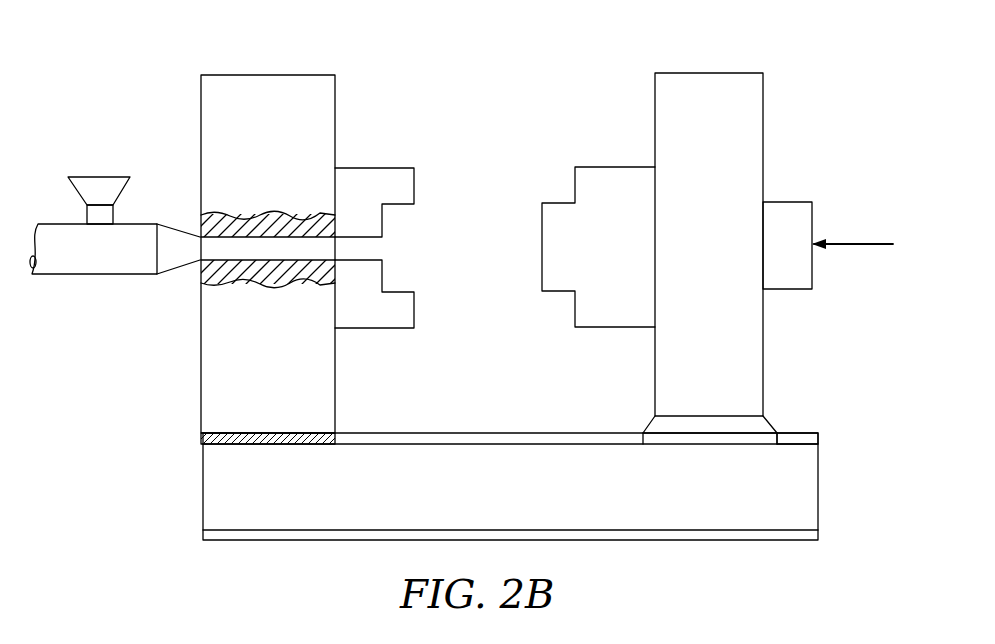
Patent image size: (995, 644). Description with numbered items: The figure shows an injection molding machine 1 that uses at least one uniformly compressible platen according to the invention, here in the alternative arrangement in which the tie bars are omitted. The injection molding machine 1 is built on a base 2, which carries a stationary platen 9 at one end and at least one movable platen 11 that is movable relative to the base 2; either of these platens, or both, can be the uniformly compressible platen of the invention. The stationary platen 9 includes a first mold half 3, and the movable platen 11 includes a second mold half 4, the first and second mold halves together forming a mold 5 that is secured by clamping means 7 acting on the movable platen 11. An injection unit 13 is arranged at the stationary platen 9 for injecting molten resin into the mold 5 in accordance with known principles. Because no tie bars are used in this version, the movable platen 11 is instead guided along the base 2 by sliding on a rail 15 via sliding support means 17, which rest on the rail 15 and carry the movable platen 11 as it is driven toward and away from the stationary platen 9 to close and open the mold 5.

The injection molding machine 1 is at (585, 32).
The base 2 is at (748, 522).
The first mold half 3 is at (390, 186).
The second mold half 4 is at (626, 303).
The mold 5 is at (469, 302).
The clamping means 7 is at (806, 219).
The stationary platen 9 is at (273, 93).
The movable platen 11 is at (721, 154).
The injection unit 13 is at (91, 180).
The rail 15 is at (799, 433).
The sliding support means 17 is at (720, 421).